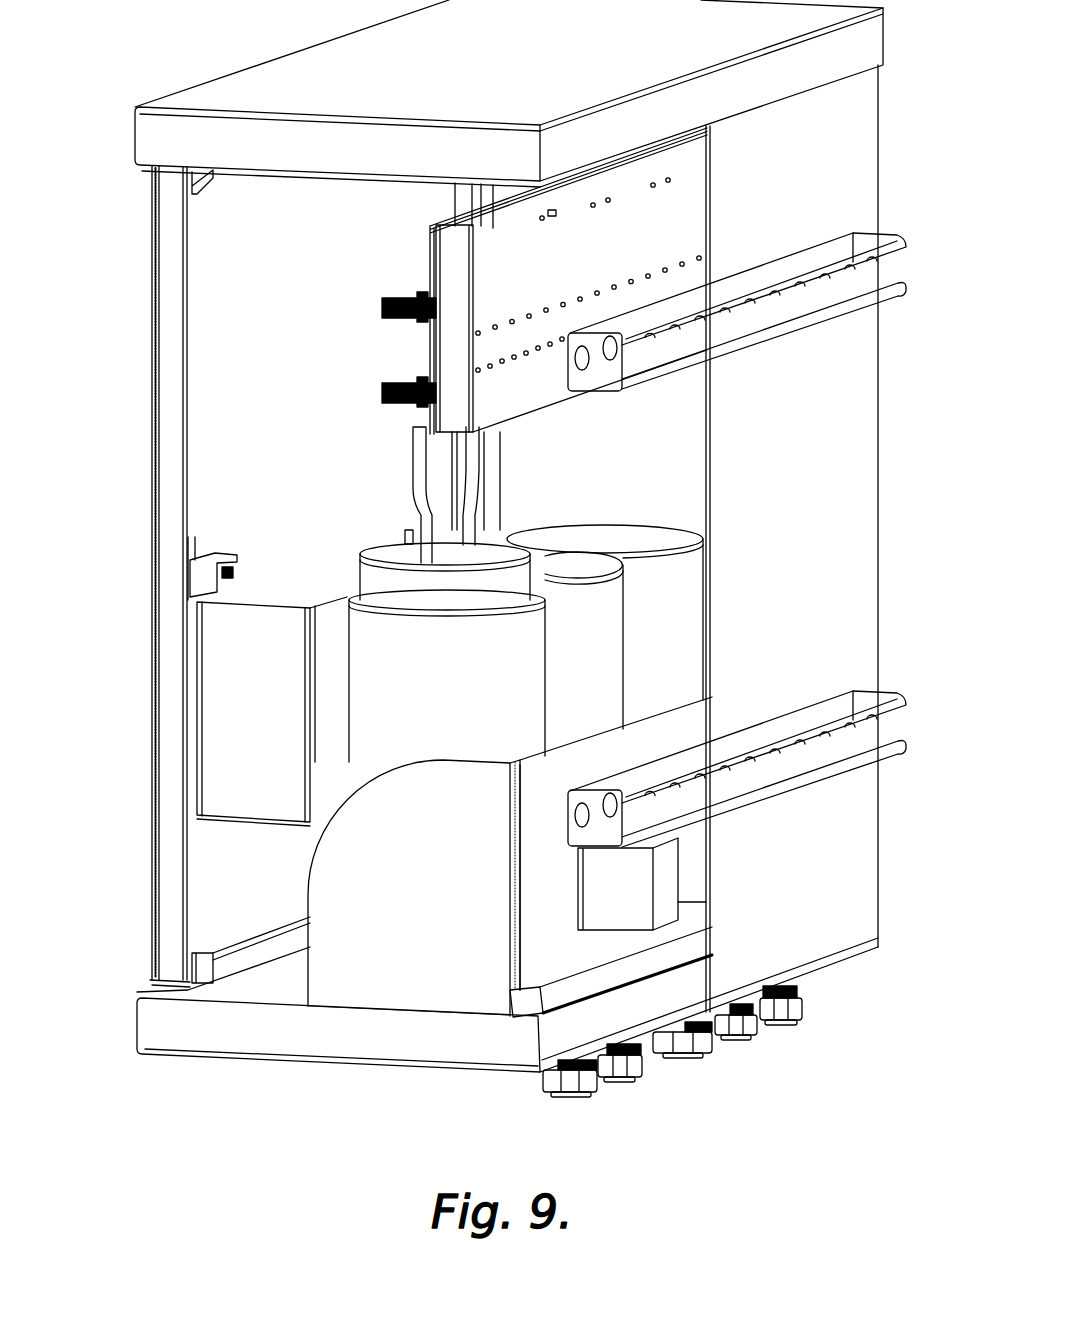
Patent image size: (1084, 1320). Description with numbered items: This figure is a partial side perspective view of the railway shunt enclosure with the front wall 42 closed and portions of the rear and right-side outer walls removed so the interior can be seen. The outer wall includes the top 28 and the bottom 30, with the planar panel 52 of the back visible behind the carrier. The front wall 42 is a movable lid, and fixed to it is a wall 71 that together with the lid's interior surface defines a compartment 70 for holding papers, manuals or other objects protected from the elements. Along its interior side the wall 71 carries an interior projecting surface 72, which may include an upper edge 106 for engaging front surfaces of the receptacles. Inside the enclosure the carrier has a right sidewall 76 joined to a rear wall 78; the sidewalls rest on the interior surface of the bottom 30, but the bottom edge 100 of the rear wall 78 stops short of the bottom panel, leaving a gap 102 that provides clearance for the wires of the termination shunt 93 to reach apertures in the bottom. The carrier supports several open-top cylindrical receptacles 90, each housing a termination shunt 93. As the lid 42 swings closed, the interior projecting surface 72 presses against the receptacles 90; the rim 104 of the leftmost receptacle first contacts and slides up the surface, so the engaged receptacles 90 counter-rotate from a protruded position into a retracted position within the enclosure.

The top 28 is at (122, 115).
The bottom 30 is at (124, 1056).
The front wall 42 is at (236, 290).
The planar panel of the back 52 is at (862, 350).
The compartment 70 is at (276, 588).
The wall 71 is at (260, 718).
The interior projecting surface 72 is at (329, 737).
The right sidewall 76 is at (443, 968).
The rear wall 78 is at (688, 722).
The receptacle 90 is at (688, 567).
The termination shunt 93 is at (387, 533).
The bottom edge of the rear wall 100 is at (678, 938).
The gap 102 is at (600, 982).
The rim 104 is at (636, 528).
The upper edge 106 is at (333, 603).